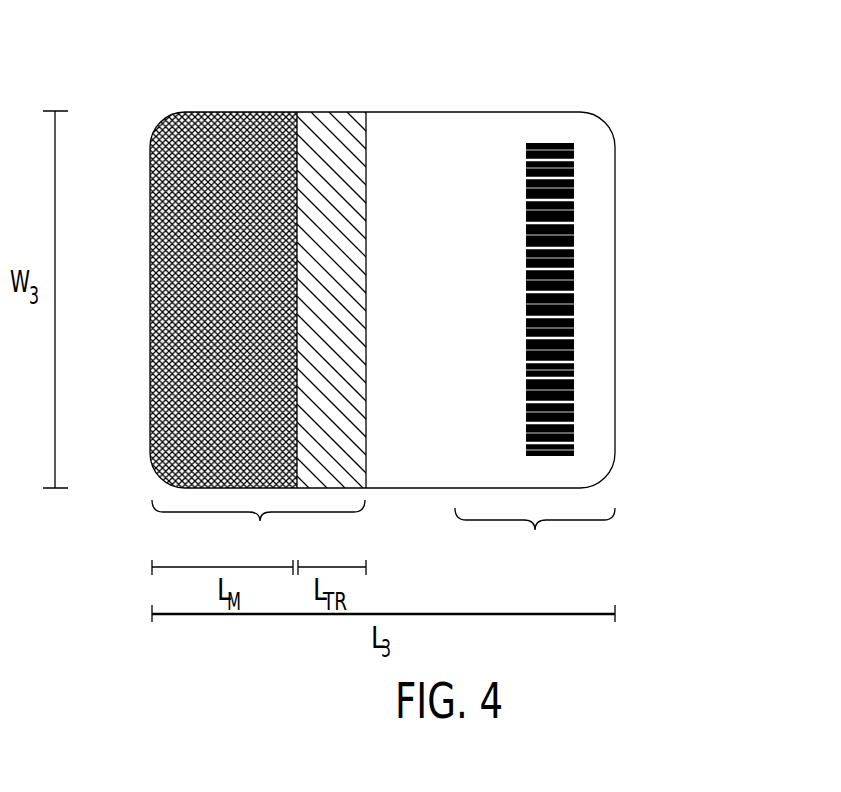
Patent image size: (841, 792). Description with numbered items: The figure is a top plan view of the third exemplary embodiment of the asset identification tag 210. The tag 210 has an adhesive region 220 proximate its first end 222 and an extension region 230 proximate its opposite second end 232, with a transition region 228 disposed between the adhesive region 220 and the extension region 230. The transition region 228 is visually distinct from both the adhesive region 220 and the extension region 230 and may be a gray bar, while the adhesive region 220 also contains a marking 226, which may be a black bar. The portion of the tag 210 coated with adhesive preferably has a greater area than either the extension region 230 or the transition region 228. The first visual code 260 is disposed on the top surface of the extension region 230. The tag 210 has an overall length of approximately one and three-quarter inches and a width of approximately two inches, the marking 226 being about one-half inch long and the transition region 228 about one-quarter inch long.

The asset identification tag 210 is at (674, 86).
The adhesive region 220 is at (258, 531).
The first end 222 is at (150, 292).
The marking 226 is at (187, 122).
The transition region 228 is at (327, 125).
The extension region 230 is at (535, 540).
The second end 232 is at (615, 292).
The first visual code 260 is at (557, 143).